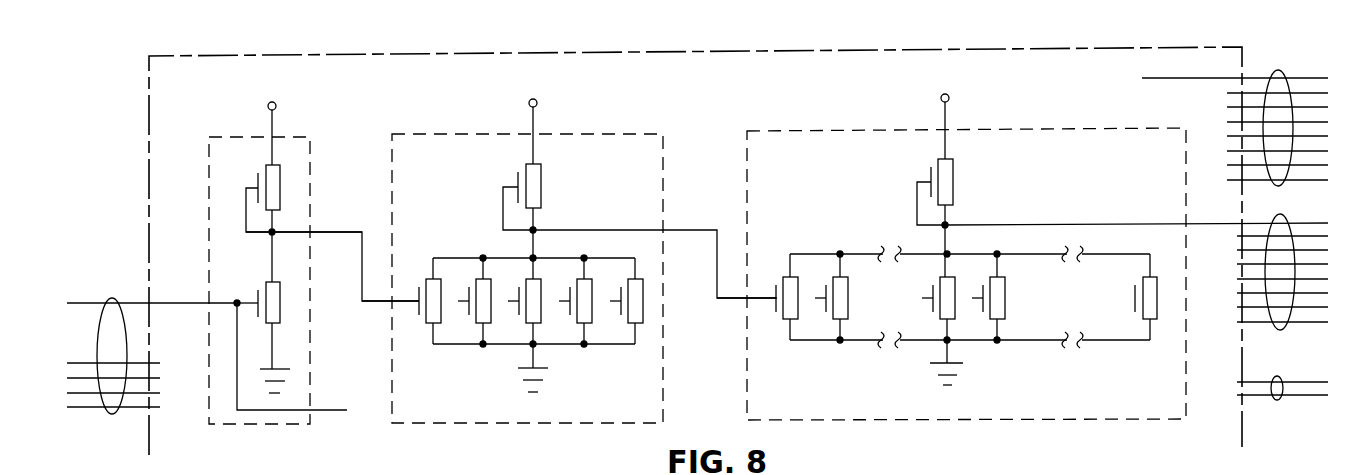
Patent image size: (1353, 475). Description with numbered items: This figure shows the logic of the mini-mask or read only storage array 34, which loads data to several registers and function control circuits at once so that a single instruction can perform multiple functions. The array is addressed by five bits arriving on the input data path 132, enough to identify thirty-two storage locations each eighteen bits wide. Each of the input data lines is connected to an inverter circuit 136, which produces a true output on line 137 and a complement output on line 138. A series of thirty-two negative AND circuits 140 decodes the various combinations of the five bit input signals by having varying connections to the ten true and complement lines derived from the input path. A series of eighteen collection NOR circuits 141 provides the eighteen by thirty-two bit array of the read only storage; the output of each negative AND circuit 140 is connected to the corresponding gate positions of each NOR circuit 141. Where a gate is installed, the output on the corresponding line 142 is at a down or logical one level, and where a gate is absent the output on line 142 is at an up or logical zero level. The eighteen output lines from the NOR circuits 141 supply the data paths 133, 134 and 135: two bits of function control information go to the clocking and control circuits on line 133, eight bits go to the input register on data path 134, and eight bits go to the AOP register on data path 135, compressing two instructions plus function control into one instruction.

The mini-mask read only storage array 34 is at (695, 251).
The input data path 132 is at (152, 330).
The function control line 133 is at (1282, 413).
The data path to input register 134 is at (1235, 104).
The data path to AOP register 135 is at (1282, 292).
The inverter circuit 136 is at (314, 249).
The true output line 137 is at (293, 356).
The complement output line 138 is at (304, 201).
The negative AND circuit 140 is at (569, 248).
The collection NOR circuit 141 is at (951, 245).
The output line 142 is at (1136, 197).